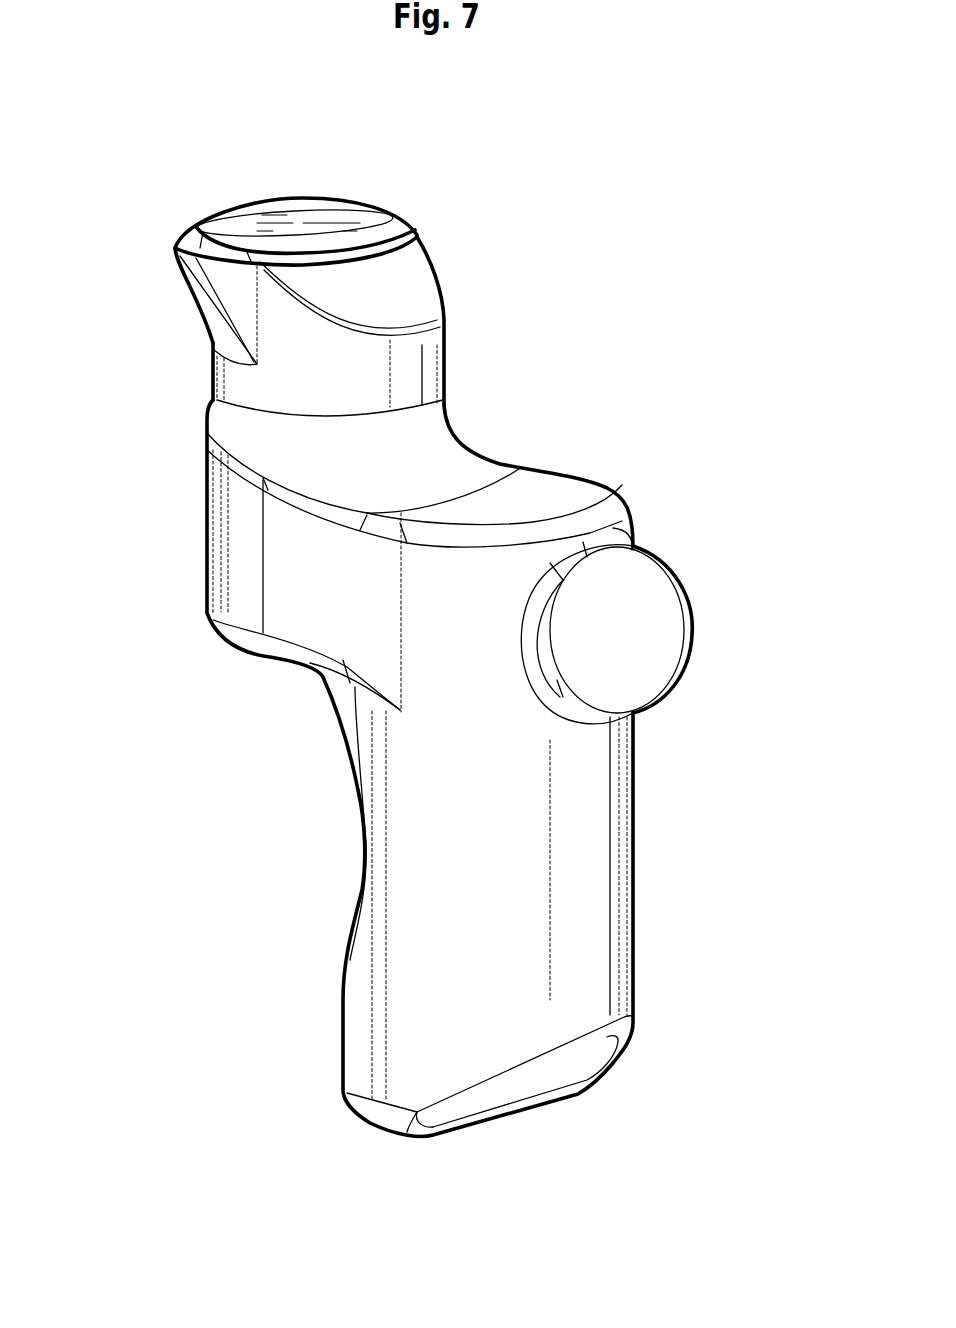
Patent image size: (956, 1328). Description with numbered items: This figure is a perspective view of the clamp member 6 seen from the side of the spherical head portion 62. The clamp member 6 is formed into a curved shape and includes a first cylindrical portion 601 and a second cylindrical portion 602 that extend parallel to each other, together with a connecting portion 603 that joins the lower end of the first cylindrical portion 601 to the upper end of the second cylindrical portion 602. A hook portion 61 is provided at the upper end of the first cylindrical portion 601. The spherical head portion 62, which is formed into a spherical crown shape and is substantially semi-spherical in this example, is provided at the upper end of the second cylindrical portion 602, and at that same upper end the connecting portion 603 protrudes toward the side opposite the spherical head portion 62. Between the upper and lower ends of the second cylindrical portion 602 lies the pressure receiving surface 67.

The clamp member 6 is at (468, 1252).
The hook portion 61 is at (220, 205).
The spherical head portion 62 is at (695, 612).
The pressure receiving surface 67 is at (355, 846).
The first cylindrical portion 601 is at (420, 370).
The second cylindrical portion 602 is at (608, 862).
The connecting portion 603 is at (205, 535).